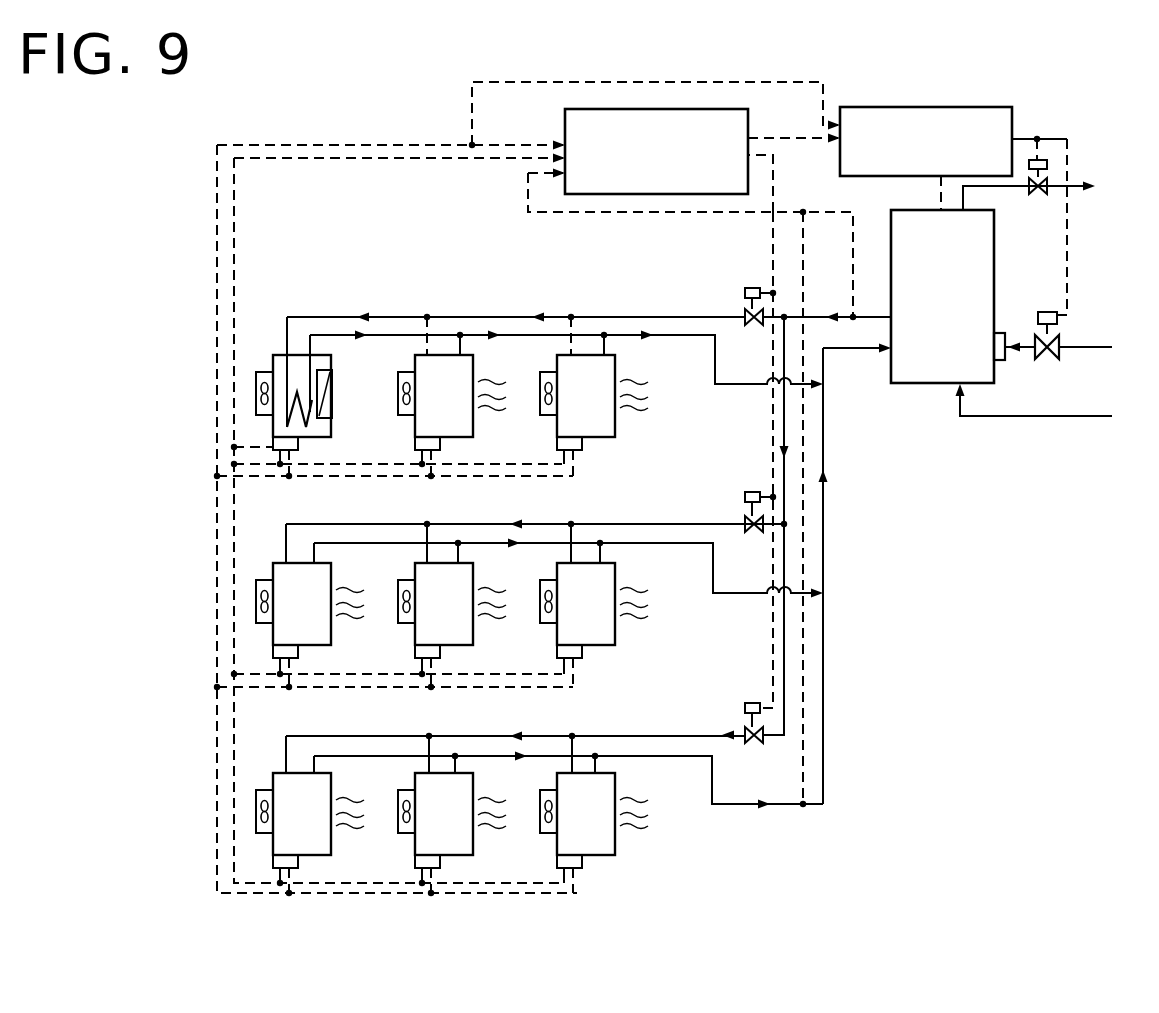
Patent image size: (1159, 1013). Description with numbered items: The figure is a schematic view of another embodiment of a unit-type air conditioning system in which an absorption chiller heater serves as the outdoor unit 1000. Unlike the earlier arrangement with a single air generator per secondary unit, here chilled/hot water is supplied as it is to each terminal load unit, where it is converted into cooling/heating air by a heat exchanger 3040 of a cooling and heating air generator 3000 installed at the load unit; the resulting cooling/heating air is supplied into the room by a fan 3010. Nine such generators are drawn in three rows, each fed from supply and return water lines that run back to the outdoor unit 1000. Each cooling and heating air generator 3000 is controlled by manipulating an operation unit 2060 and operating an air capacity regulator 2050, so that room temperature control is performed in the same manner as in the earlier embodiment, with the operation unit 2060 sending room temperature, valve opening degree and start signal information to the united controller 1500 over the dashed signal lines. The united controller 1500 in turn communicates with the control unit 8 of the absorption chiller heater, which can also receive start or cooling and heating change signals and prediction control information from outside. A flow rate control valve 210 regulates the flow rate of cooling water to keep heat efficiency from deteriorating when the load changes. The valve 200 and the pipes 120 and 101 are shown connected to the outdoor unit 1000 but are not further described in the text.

The united controller 1500 is at (670, 109).
The control unit 8 is at (927, 107).
The flow rate control valve 210 is at (1050, 160).
The valve 200 is at (1046, 312).
The pipe 120 is at (1087, 347).
The outdoor unit 1000 is at (931, 384).
The pipe 101 is at (1043, 417).
The cooling and heating air generator 3000 is at (271, 393).
The air capacity regulator 2050 is at (333, 372).
The fan 3010 is at (256, 405).
The heat exchanger 3040 is at (310, 422).
The operation unit 2060 is at (305, 455).